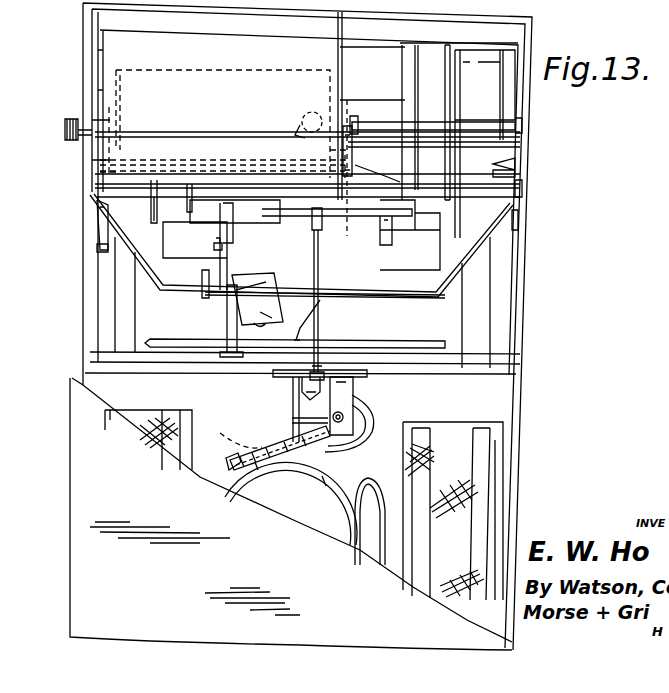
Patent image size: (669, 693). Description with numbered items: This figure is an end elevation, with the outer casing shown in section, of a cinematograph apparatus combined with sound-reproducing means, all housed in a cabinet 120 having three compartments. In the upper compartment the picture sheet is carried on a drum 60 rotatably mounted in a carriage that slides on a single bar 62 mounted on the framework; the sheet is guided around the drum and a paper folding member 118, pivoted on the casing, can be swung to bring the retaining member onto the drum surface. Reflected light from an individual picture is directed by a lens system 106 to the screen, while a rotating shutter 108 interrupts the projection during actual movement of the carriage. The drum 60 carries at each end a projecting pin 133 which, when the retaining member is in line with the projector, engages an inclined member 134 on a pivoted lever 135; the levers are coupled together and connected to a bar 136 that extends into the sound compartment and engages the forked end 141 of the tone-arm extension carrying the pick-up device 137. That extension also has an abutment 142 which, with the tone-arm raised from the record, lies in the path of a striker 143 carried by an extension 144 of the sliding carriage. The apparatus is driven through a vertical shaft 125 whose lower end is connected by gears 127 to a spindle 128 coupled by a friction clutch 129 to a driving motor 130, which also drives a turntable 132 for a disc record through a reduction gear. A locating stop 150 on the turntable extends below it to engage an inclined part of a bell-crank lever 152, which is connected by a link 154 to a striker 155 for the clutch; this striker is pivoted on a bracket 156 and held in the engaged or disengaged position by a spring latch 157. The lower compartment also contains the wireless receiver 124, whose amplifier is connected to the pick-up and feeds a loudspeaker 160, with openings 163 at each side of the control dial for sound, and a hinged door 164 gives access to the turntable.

The paper folding member 118 is at (456, 42).
The drum 60 is at (214, 74).
The bar 62 is at (368, 121).
The lens system 106 is at (305, 114).
The vertical shaft 125 is at (328, 320).
The projecting pin 133 is at (350, 172).
The inclined member 134 is at (496, 167).
The pivoted lever 135 is at (506, 205).
The hinged door 164 is at (466, 252).
The extension 144 is at (100, 228).
The striker 143 is at (98, 248).
The abutment 142 is at (214, 247).
The pick-up device 137 is at (262, 273).
The rotating shutter 108 is at (350, 178).
The locating stop 150 is at (322, 300).
The forked end 141 is at (222, 296).
The bar 136 is at (382, 302).
The turntable 132 is at (302, 353).
The cabinet 120 is at (86, 412).
The openings 163 is at (160, 412).
The bell-crank lever 152 is at (292, 380).
The spindle 128 is at (290, 418).
The striker 155 is at (248, 436).
The link 154 is at (292, 434).
The friction clutch 129 is at (356, 398).
The driving motor 130 is at (350, 410).
The gears 127 is at (366, 436).
The loudspeaker 160 is at (324, 482).
The wireless receiver 124 is at (368, 486).
The spring latch 157 is at (260, 466).
The bracket 156 is at (323, 468).